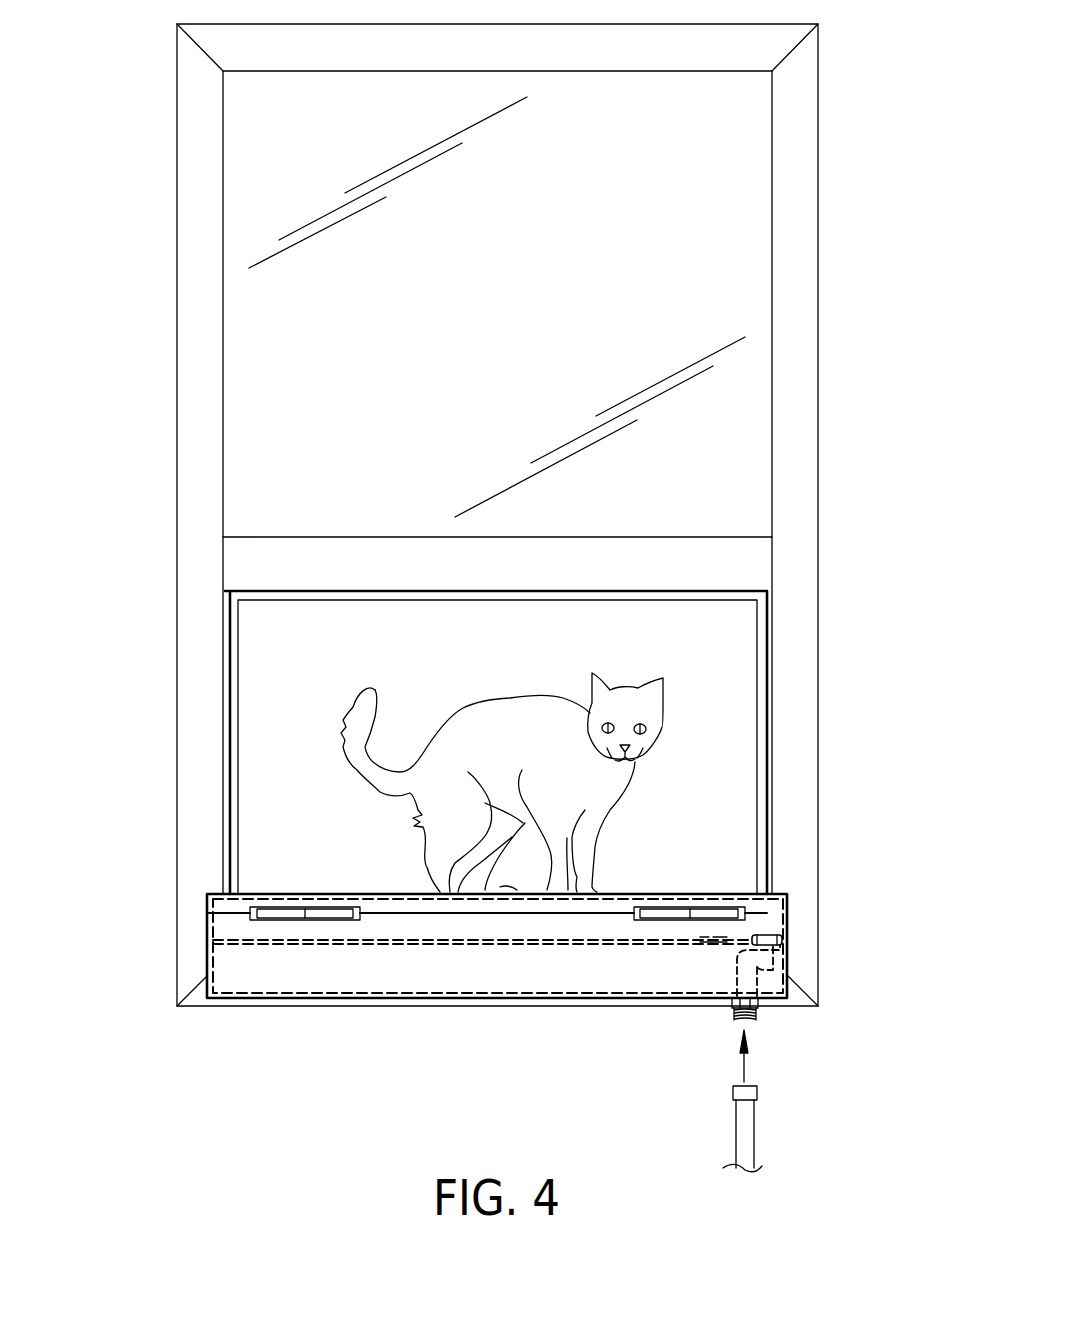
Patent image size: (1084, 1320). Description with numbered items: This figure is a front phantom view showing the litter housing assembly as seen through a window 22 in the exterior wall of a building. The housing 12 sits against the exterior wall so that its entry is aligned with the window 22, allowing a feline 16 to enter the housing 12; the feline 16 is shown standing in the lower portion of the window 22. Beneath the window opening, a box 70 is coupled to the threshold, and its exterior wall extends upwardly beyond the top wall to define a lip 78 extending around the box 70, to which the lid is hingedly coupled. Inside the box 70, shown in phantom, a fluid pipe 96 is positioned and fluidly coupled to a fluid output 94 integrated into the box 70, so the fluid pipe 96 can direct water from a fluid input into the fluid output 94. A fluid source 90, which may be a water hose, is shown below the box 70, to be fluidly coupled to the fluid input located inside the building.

The window 22 is at (177, 417).
The housing 12 is at (225, 591).
The feline 16 is at (630, 692).
The box 70 is at (207, 960).
The lip 78 is at (763, 910).
The fluid output 94 is at (775, 935).
The fluid pipe 96 is at (757, 985).
The fluid source 90 is at (747, 1123).